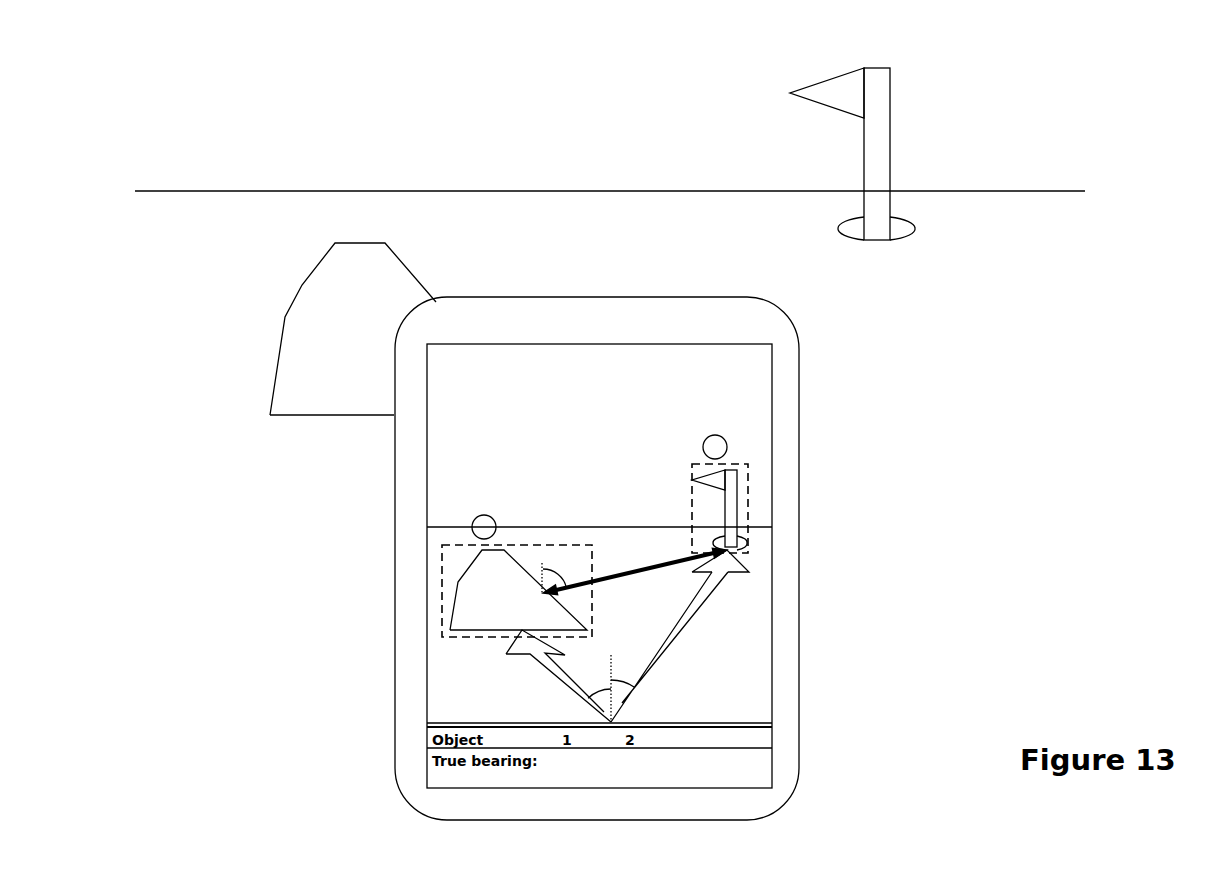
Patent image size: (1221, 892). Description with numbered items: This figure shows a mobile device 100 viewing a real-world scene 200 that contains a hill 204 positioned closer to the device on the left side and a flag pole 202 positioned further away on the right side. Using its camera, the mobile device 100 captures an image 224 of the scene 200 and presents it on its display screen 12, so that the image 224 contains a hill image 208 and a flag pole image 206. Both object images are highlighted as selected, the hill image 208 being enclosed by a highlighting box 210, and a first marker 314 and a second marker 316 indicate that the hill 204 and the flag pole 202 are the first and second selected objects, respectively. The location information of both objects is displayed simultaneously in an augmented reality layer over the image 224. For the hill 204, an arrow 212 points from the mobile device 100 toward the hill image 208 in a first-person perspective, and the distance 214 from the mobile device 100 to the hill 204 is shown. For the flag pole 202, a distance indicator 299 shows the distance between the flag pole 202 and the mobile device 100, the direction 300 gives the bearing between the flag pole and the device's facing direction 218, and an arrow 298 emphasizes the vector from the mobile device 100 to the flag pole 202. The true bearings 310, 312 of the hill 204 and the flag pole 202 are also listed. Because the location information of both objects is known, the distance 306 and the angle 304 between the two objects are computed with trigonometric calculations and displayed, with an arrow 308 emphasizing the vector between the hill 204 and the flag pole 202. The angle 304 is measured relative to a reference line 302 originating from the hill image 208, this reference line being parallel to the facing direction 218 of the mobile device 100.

The scene 200 is at (440, 63).
The flag pole 202 is at (885, 137).
The hill 204 is at (312, 287).
The mobile device 100 is at (393, 468).
The display screen 12 is at (427, 480).
The image 224 is at (588, 406).
The marker 314 is at (484, 515).
The marker 316 is at (713, 435).
The highlighting box 210 is at (438, 573).
The hill image 208 is at (462, 595).
The flag pole image 206 is at (737, 492).
The reference line 302 is at (543, 579).
The angle 304 is at (567, 547).
The distance 306 is at (633, 547).
The arrow 308 is at (680, 553).
The arrow 298 is at (733, 569).
The direction 300 is at (754, 636).
The distance indicator 299 is at (728, 650).
The facing direction 218 is at (613, 697).
The arrow 212 is at (506, 654).
The distance 214 is at (517, 687).
The true bearing 310 is at (567, 778).
The true bearing 312 is at (633, 778).